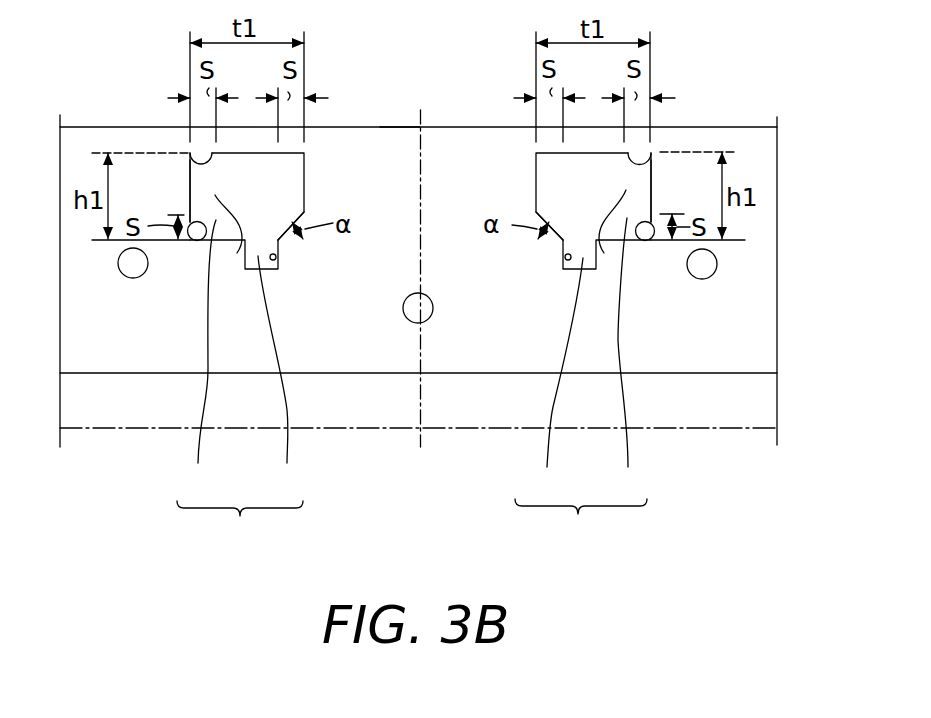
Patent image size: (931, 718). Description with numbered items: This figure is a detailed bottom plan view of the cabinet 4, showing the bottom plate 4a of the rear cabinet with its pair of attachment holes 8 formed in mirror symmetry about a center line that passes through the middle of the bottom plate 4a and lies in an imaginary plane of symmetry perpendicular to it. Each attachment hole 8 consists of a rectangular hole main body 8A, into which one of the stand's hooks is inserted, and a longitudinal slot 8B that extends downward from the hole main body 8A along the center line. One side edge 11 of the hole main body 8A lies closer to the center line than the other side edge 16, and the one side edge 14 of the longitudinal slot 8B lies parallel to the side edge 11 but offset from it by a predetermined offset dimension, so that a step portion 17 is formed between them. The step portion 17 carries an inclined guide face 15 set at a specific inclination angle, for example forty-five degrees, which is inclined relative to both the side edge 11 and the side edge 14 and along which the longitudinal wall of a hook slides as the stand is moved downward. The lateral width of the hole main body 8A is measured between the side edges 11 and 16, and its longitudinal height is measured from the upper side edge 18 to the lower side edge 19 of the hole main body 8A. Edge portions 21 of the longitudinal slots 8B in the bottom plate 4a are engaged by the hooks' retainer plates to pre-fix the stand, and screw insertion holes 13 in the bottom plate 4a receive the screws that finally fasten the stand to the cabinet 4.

The cabinet 4 is at (457, 125).
The bottom plate 4a is at (395, 147).
The attachment holes 8 is at (412, 527).
The hole main body 8A is at (410, 361).
The longitudinal slot 8B is at (420, 380).
The one side edge of the hole main body 11 is at (304, 180).
The screw insertion holes 13 is at (135, 268).
The one side edge of the longitudinal slot 14 is at (276, 258).
The inclined guide face 15 is at (290, 230).
The other side edge of the hole main body 16 is at (192, 180).
The step portion 17 is at (532, 248).
The upper side edge of the hole main body 18 is at (190, 153).
The lower side edge of the hole main body 19 is at (192, 241).
The edge portions of the longitudinal slots 21 is at (425, 208).